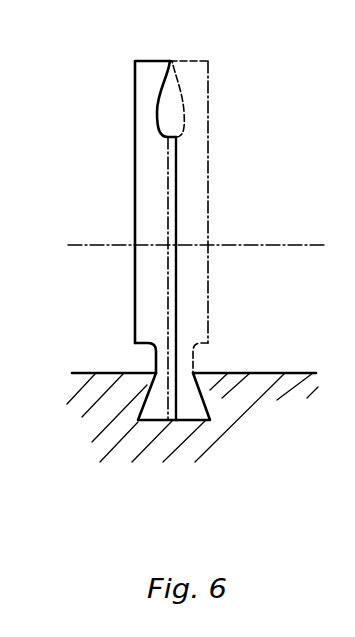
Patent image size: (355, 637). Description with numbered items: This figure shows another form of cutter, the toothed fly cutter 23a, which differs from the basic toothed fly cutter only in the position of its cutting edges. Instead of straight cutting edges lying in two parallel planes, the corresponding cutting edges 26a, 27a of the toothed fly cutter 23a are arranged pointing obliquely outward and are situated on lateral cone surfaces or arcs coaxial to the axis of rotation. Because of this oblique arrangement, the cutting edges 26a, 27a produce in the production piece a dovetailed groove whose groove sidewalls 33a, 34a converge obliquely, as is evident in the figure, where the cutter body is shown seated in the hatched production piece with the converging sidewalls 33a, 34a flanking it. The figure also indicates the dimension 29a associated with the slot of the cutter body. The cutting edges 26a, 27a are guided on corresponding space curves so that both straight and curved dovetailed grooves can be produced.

The toothed fly cutter 23a is at (143, 227).
The cutting edge 27a is at (170, 77).
The slot 29a is at (146, 186).
The cutting edge 26a is at (150, 386).
The groove sidewall 33a is at (138, 419).
The groove sidewall 34a is at (205, 407).